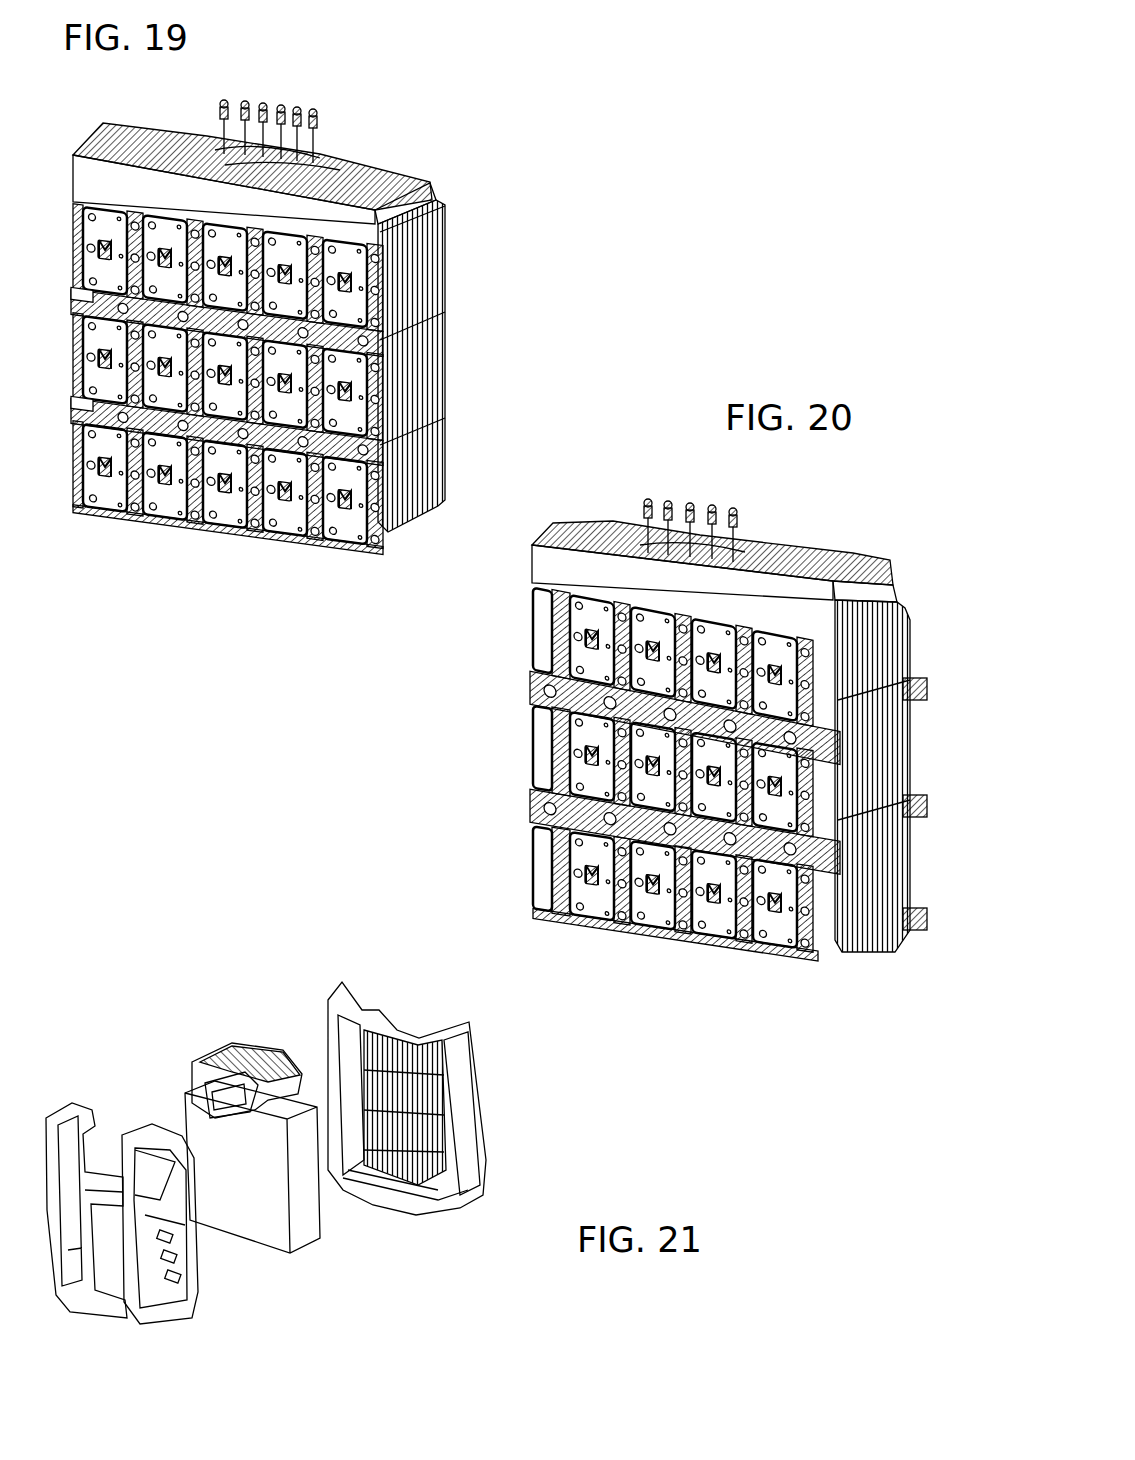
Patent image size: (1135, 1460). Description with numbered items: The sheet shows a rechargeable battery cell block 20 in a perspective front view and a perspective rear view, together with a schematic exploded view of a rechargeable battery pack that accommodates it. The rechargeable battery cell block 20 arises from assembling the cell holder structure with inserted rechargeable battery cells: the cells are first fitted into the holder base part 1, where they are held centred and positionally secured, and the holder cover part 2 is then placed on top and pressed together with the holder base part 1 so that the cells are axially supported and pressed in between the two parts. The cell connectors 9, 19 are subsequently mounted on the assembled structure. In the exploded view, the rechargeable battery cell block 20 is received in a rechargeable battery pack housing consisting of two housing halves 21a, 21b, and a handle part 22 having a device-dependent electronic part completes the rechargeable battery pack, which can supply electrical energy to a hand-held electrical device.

In FIG. 19, the holder base part 1 is at (442, 366).
In FIG. 20, the holder base part 1 is at (897, 776).
In FIG. 19, the holder cover part 2 is at (286, 325).
In FIG. 20, the holder cover part 2 is at (742, 782).
In FIG. 19, the cell connector 9 is at (330, 510).
In FIG. 20, the cell connector 9 is at (723, 913).
In FIG. 20, the cell connector 19 is at (850, 732).
In FIG. 19, the rechargeable battery cell block 20 is at (313, 360).
In FIG. 20, the rechargeable battery cell block 20 is at (710, 773).
In FIG. 21, the rechargeable battery cell block 20 is at (270, 1144).
In FIG. 21, the housing half 21a is at (148, 1320).
In FIG. 21, the housing half 21b is at (466, 1205).
In FIG. 21, the handle part 22 is at (236, 1055).